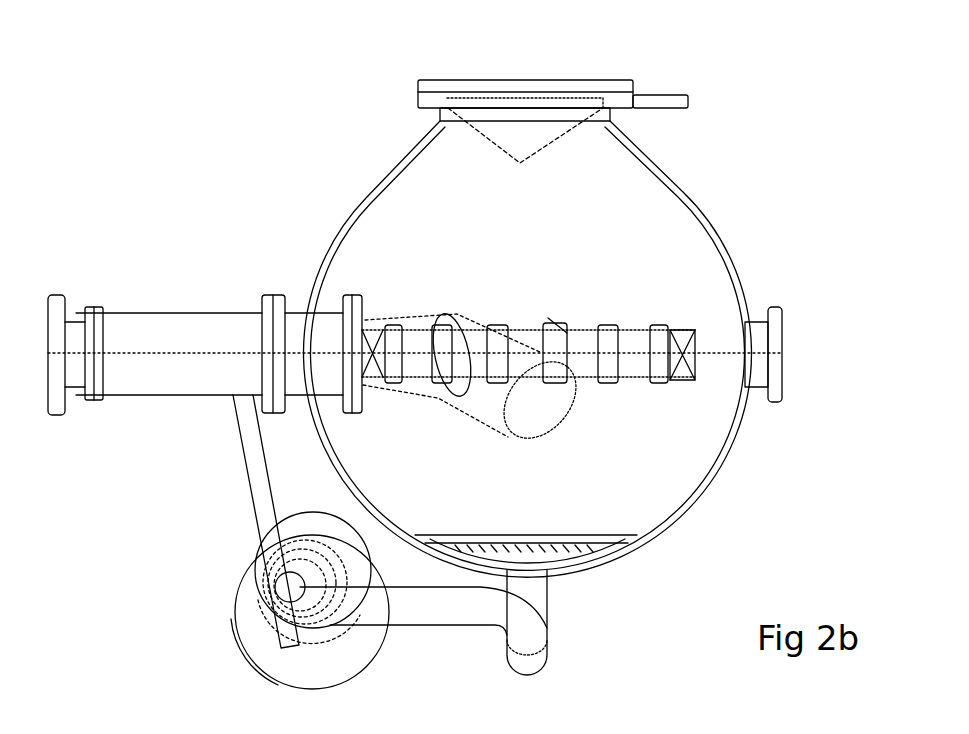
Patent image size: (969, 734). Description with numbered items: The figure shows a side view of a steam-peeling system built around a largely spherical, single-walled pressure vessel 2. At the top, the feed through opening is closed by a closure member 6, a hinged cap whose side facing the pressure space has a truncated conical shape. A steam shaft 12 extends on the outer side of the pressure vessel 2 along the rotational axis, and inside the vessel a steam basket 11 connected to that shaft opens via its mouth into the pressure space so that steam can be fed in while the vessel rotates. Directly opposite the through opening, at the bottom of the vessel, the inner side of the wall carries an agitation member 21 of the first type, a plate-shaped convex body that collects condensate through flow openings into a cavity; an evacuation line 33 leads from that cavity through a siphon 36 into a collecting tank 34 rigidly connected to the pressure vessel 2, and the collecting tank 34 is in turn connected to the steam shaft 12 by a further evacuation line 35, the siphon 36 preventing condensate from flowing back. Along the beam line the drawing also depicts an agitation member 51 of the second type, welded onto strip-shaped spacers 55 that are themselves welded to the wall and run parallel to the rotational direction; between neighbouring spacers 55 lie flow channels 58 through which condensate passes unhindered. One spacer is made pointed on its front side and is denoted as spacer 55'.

The pressure vessel 2 is at (345, 193).
The closure member 6 is at (540, 137).
The steam shaft 12 is at (165, 325).
The flow channels 58 is at (637, 345).
The pointed strip-shaped spacer 55' is at (534, 319).
The strip-shaped spacers 55 is at (633, 393).
The agitation members of the second type 51 is at (692, 307).
The steam basket 11 is at (483, 405).
The agitation member of the first type 21 is at (584, 531).
The siphon 36 is at (564, 676).
The evacuation line 33 is at (462, 612).
The collecting tank 34 is at (268, 630).
The evacuation line 35 is at (258, 467).